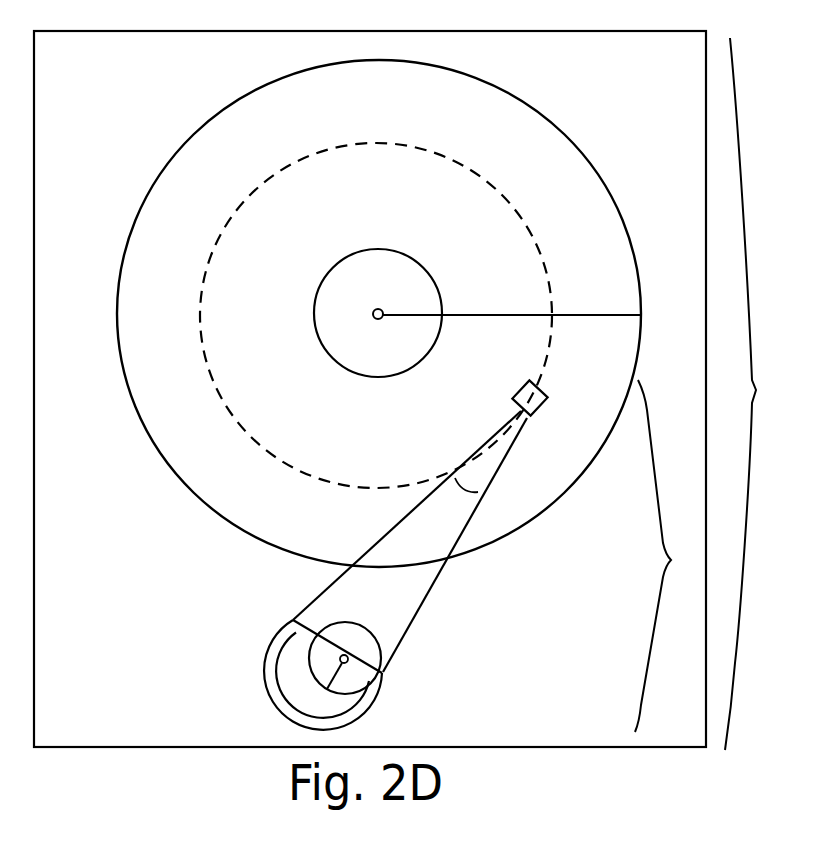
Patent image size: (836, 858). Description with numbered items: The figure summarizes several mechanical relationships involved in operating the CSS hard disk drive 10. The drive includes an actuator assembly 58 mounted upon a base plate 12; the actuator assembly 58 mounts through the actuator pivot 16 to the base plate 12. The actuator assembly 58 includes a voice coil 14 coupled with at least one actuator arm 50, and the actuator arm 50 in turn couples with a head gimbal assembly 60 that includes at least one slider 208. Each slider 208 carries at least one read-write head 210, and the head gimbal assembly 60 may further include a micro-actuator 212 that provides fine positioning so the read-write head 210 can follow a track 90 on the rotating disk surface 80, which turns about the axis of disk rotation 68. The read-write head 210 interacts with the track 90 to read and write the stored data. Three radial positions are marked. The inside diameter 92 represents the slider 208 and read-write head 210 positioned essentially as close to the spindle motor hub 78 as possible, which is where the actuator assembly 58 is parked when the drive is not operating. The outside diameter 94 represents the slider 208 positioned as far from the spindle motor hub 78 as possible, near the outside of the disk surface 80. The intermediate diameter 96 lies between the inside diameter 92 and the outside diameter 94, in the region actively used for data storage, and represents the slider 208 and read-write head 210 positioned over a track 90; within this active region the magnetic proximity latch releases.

The CSS hard disk drive 10 is at (758, 394).
The base plate 12 is at (138, 594).
The voice coil 14 is at (379, 570).
The actuator pivot 16 is at (327, 689).
The actuator arm 50 is at (455, 543).
The actuator assembly 58 is at (669, 556).
The head gimbal assembly 60 is at (497, 462).
The axis of disk rotation 68 is at (372, 314).
The spindle motor hub 78 is at (421, 264).
The disk surface 80 is at (120, 272).
The track 90 is at (537, 226).
The inside diameter 92 is at (468, 314).
The outside diameter 94 is at (642, 315).
The intermediate diameter 96 is at (553, 320).
The slider 208 is at (538, 407).
The read-write head 210 is at (538, 379).
The micro-actuator 212 is at (599, 364).